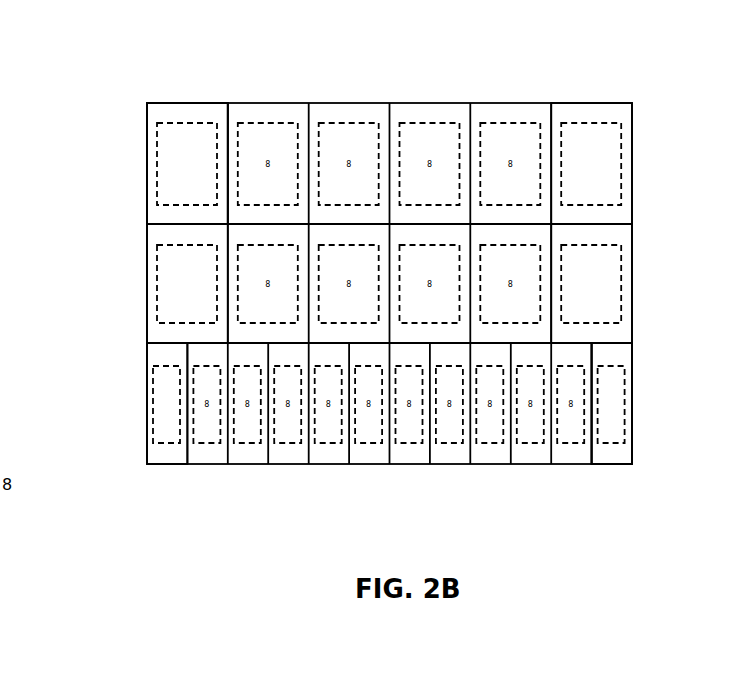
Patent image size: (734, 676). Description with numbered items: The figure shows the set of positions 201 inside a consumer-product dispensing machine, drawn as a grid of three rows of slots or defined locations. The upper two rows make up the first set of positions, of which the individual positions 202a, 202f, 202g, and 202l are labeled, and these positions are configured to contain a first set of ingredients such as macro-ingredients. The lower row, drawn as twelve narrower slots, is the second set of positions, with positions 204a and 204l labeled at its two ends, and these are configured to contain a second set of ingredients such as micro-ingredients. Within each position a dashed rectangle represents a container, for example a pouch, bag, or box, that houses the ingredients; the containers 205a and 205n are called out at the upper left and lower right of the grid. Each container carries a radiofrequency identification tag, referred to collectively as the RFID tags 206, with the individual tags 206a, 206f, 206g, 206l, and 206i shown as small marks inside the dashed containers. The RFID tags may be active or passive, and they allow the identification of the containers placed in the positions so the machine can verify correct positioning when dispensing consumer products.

The set of positions 201 is at (392, 103).
The first set of positions 202a is at (168, 110).
The first set of positions 202f is at (600, 110).
The first set of positions 202g is at (148, 240).
The first set of positions 202l is at (622, 238).
The second set of positions 204a is at (148, 357).
The second set of positions 204l is at (622, 356).
The container 205a is at (152, 137).
The container 205n is at (616, 448).
The RFID tag 206a is at (196, 155).
The RFID tag 206f is at (595, 172).
The RFID tag 206g is at (175, 288).
The RFID tag 206l is at (592, 292).
The RFID tag 206i is at (165, 412).
The RFID tags 206 is at (612, 412).